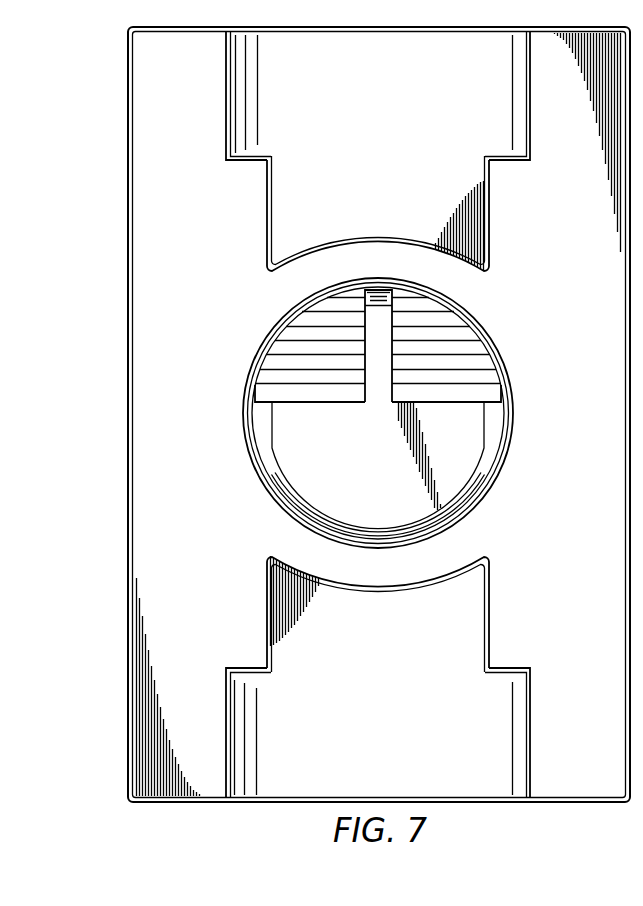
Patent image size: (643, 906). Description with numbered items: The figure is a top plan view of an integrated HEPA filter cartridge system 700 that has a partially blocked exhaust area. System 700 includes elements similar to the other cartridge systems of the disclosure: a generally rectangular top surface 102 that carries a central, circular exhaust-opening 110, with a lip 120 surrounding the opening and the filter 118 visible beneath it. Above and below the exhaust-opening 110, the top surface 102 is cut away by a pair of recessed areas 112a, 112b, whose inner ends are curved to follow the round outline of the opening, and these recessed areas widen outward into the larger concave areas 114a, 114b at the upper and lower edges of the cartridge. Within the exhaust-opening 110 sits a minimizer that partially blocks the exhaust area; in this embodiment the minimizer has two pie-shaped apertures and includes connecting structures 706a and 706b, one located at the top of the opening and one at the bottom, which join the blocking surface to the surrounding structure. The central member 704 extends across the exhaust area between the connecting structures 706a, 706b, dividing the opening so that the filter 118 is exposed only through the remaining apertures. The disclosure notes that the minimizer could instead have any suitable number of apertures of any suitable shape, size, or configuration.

The HEPA filter cartridge system 700 is at (339, 414).
The top surface 102 is at (587, 518).
The exhaust-opening 110 is at (504, 352).
The lip 120 is at (511, 394).
The filter 118 is at (316, 373).
The insert 704 is at (397, 447).
The connecting structure 706a is at (392, 298).
The connecting structure 706b is at (362, 528).
The recessed area 112a is at (403, 647).
The recessed area 112b is at (403, 209).
The concave area 114a is at (403, 744).
The concave area 114b is at (403, 112).